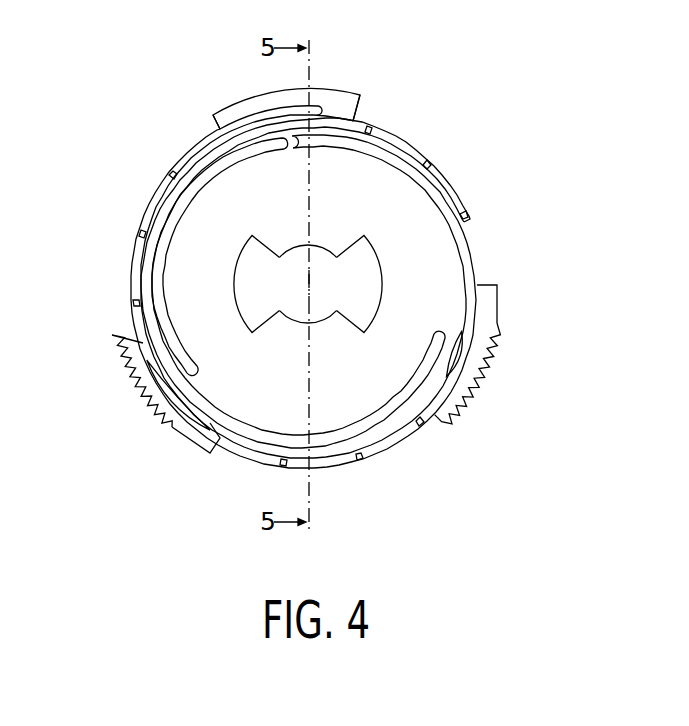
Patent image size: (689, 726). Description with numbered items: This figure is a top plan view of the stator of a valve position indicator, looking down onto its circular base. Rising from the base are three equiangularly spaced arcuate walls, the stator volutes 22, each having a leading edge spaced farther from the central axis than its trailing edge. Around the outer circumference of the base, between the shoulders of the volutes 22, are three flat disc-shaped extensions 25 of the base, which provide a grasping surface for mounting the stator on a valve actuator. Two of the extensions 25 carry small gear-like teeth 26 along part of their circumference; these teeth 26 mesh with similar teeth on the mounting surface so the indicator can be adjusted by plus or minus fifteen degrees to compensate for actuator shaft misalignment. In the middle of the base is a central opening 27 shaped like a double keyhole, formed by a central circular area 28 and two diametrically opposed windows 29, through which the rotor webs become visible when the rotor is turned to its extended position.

The stator volutes 22 is at (205, 150).
The extensions 25 is at (342, 90).
The teeth 26 is at (125, 366).
The central opening 27 is at (326, 321).
The central circular area 28 is at (307, 283).
The windows 29 is at (243, 271).